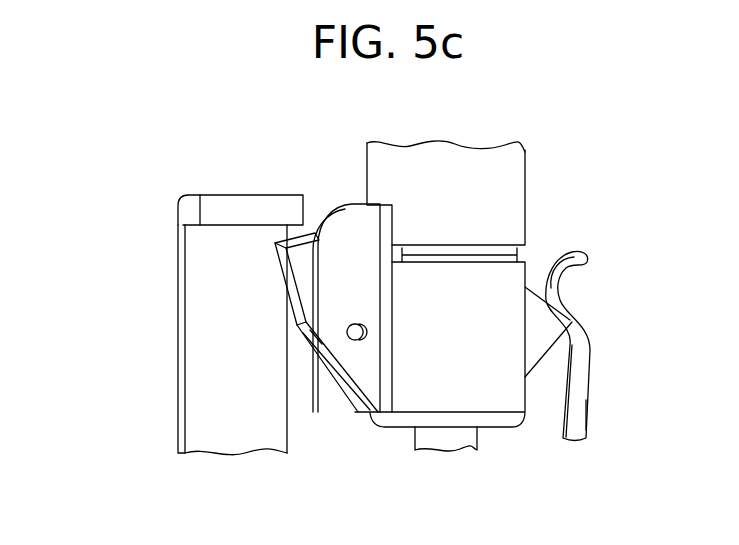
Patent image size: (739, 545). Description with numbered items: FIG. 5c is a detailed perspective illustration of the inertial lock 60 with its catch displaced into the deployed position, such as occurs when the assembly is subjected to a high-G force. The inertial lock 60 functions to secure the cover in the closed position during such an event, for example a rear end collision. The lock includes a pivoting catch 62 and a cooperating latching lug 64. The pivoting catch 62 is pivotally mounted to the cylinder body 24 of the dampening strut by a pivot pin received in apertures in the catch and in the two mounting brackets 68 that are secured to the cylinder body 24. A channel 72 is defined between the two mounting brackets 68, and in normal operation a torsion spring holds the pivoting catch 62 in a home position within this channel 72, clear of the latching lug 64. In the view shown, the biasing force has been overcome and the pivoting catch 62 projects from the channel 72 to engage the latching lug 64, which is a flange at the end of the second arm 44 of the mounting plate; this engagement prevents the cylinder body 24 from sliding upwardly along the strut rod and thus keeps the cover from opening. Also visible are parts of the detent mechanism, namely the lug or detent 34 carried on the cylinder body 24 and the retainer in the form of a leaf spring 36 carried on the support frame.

The cylinder body 24 is at (502, 187).
The lug or detent 34 is at (550, 327).
The leaf spring 36 is at (583, 395).
The second arm 44 is at (243, 403).
The inertial lock 60 is at (196, 363).
The pivoting catch 62 is at (277, 262).
The latching lug 64 is at (230, 213).
The mounting brackets 68 is at (340, 243).
The channel 72 is at (315, 222).